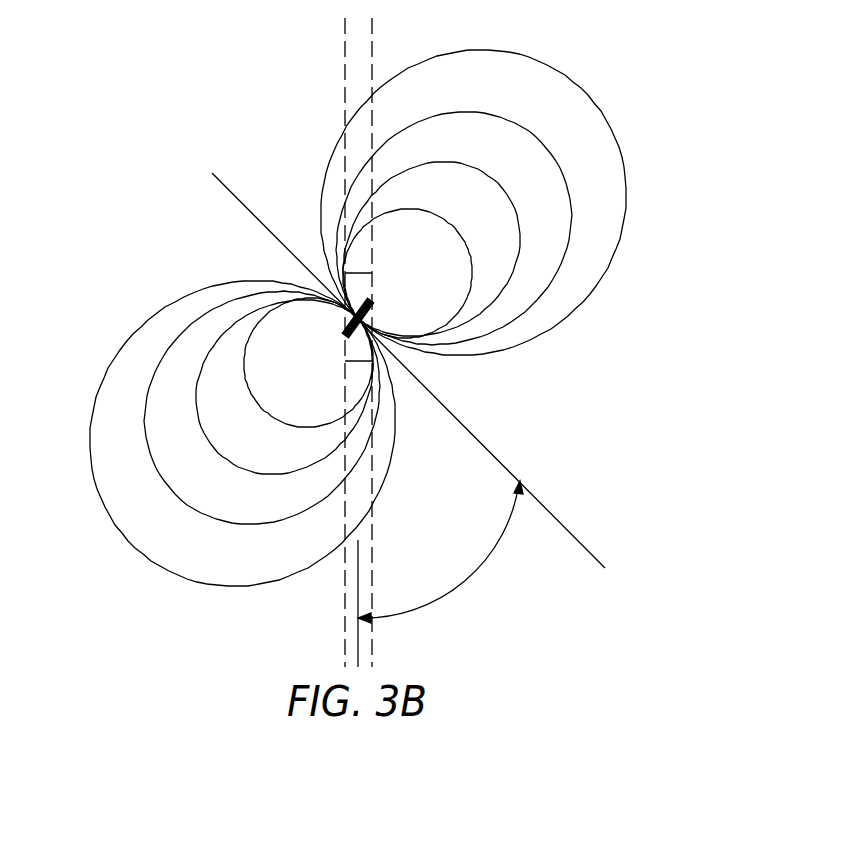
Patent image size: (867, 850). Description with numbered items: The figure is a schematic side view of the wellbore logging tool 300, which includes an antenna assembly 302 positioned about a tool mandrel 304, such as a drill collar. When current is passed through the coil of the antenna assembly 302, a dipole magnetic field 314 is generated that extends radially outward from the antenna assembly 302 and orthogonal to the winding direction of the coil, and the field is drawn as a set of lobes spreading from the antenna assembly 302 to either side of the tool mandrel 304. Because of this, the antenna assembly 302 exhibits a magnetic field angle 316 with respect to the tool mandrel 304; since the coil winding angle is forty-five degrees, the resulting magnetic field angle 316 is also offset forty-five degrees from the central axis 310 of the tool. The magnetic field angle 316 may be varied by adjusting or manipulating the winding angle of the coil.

The wellbore logging tool 300 is at (437, 376).
The antenna assembly 302 is at (381, 299).
The tool mandrel 304 is at (345, 100).
The central axis 310 is at (350, 638).
The dipole magnetic field 314 is at (632, 165).
The magnetic field angle 316 is at (479, 569).